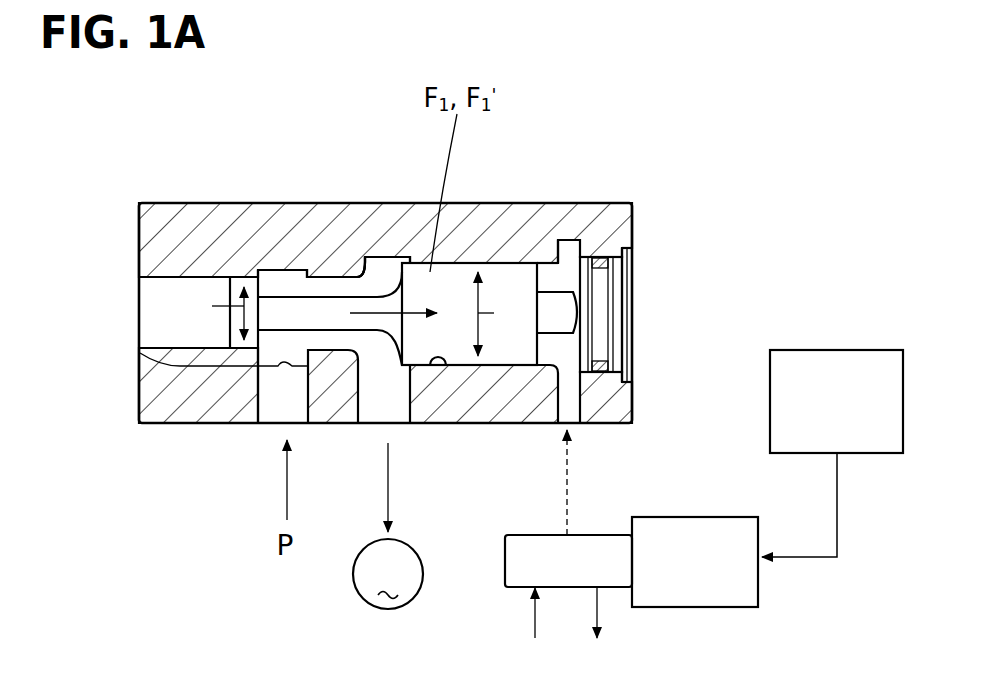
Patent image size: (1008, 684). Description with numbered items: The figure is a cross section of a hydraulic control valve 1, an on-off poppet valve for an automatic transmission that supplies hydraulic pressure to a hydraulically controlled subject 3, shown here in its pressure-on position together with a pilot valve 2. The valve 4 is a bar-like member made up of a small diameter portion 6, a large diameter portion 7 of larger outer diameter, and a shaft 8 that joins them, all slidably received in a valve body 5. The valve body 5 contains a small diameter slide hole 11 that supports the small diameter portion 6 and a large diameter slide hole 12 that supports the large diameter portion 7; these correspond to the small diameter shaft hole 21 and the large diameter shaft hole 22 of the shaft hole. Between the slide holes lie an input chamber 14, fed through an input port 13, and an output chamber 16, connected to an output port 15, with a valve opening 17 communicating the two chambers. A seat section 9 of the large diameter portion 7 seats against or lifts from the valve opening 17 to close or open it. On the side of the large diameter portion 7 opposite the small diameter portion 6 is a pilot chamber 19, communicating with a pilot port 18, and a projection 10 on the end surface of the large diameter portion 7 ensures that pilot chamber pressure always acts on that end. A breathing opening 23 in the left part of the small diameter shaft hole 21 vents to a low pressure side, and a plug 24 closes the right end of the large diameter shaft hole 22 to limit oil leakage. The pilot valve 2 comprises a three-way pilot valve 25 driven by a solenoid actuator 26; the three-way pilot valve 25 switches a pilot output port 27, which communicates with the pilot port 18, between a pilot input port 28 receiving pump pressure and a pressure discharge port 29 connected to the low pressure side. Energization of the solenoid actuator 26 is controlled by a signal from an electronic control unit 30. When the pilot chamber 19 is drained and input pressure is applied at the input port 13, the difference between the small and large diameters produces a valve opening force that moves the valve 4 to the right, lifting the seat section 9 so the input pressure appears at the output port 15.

The hydraulic control valve 1 is at (170, 190).
The pilot valve 2 is at (611, 541).
The hydraulically controlled subject 3 is at (388, 574).
The valve 4 is at (547, 280).
The valve body 5 is at (518, 218).
The small diameter portion 6 is at (233, 280).
The large diameter portion 7 is at (460, 275).
The shaft 8 is at (336, 305).
The seat section 9 is at (391, 342).
The projection 10 is at (563, 313).
The small diameter slide hole 11 is at (163, 290).
The large diameter slide hole 12 is at (484, 412).
The input port 13 is at (273, 425).
The input chamber 14 is at (283, 282).
The output port 15 is at (372, 425).
The output chamber 16 is at (382, 266).
The valve opening 17 is at (364, 273).
The pilot port 18 is at (570, 398).
The pilot chamber 19 is at (570, 275).
The small diameter shaft hole 21 is at (224, 376).
The large diameter shaft hole 22 is at (447, 368).
The breathing opening 23 is at (160, 311).
The plug 24 is at (613, 335).
The three-way pilot valve 25 is at (525, 542).
The solenoid actuator 26 is at (685, 600).
The pilot output port 27 is at (567, 534).
The pilot input port 28 is at (530, 590).
The pressure discharge port 29 is at (590, 590).
The electronic control unit 30 is at (847, 365).